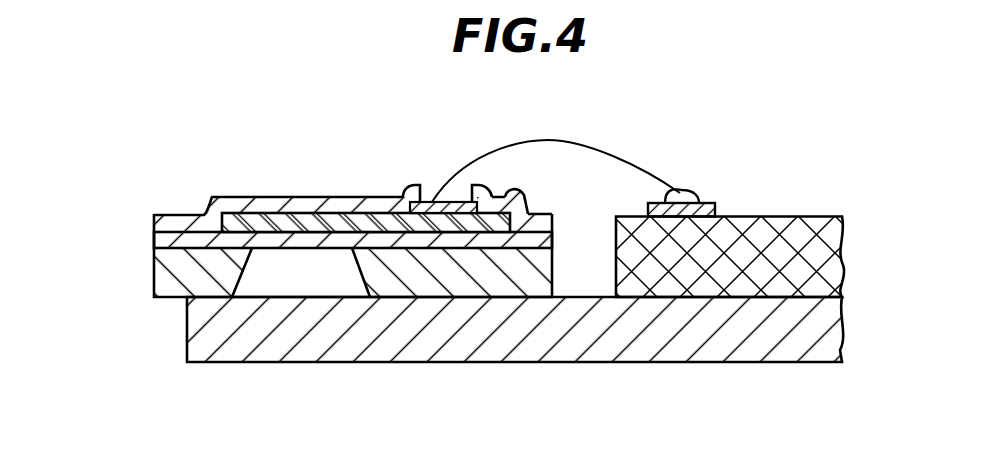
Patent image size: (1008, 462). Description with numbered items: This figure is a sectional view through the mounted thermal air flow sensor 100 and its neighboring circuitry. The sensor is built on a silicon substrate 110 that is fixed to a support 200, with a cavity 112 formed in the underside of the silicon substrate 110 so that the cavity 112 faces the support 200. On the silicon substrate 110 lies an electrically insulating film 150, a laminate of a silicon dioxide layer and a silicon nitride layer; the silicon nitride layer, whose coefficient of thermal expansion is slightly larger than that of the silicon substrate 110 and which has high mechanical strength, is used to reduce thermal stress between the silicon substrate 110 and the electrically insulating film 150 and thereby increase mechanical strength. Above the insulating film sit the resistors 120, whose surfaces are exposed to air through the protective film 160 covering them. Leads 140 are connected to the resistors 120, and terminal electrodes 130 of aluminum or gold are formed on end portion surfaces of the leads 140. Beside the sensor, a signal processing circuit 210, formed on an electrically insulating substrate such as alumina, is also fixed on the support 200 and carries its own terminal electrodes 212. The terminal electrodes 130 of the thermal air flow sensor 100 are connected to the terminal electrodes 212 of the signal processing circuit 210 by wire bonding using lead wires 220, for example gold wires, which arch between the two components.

The thermal air flow sensor 100 is at (324, 188).
The silicon substrate 110 is at (182, 273).
The cavity 112 is at (268, 282).
The resistors 120 is at (240, 213).
The terminal electrodes 130 is at (426, 201).
The leads 140 is at (512, 210).
The electrically insulating film 150 is at (153, 248).
The protective film 160 is at (167, 213).
The support 200 is at (366, 345).
The signal processing circuit 210 is at (772, 242).
The terminal electrodes of signal processing circuit 212 is at (703, 207).
The lead wires 220 is at (608, 147).